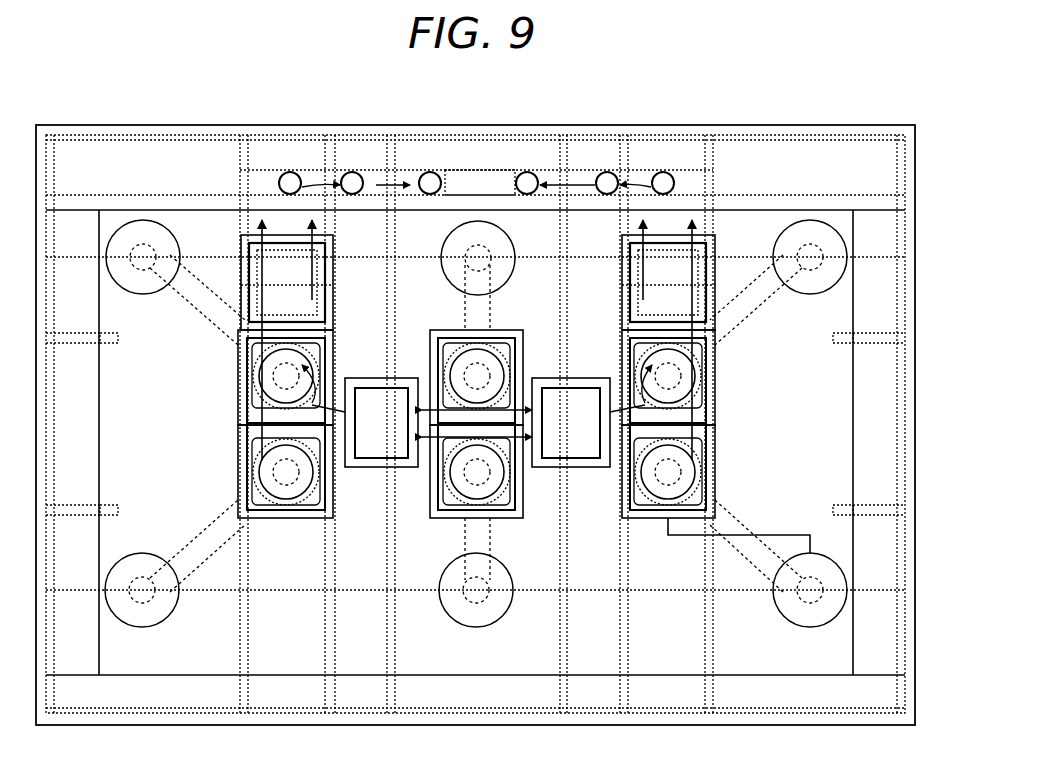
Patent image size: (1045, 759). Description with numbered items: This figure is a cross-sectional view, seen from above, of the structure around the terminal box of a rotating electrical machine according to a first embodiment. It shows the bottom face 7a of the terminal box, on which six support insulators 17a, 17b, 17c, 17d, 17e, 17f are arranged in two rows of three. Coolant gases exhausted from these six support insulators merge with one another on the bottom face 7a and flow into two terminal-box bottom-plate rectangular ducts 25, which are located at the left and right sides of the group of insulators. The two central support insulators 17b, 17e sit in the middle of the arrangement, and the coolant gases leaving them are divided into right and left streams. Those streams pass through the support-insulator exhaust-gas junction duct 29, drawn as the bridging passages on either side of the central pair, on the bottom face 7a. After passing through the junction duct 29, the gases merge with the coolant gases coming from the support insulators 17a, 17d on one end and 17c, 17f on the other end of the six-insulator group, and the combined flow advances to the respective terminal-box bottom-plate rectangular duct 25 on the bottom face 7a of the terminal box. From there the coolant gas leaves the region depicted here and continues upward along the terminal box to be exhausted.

The bottom face of the terminal box 7a is at (915, 365).
The support insulator 17a is at (257, 380).
The support insulator 17b is at (503, 362).
The support insulator 17c is at (697, 380).
The support insulator 17d is at (262, 470).
The support insulator 17e is at (498, 488).
The support insulator 17f is at (692, 470).
The terminal-box bottom-plate rectangular duct 25 is at (257, 302).
The support-insulator exhaust-gas junction duct 29 is at (375, 468).